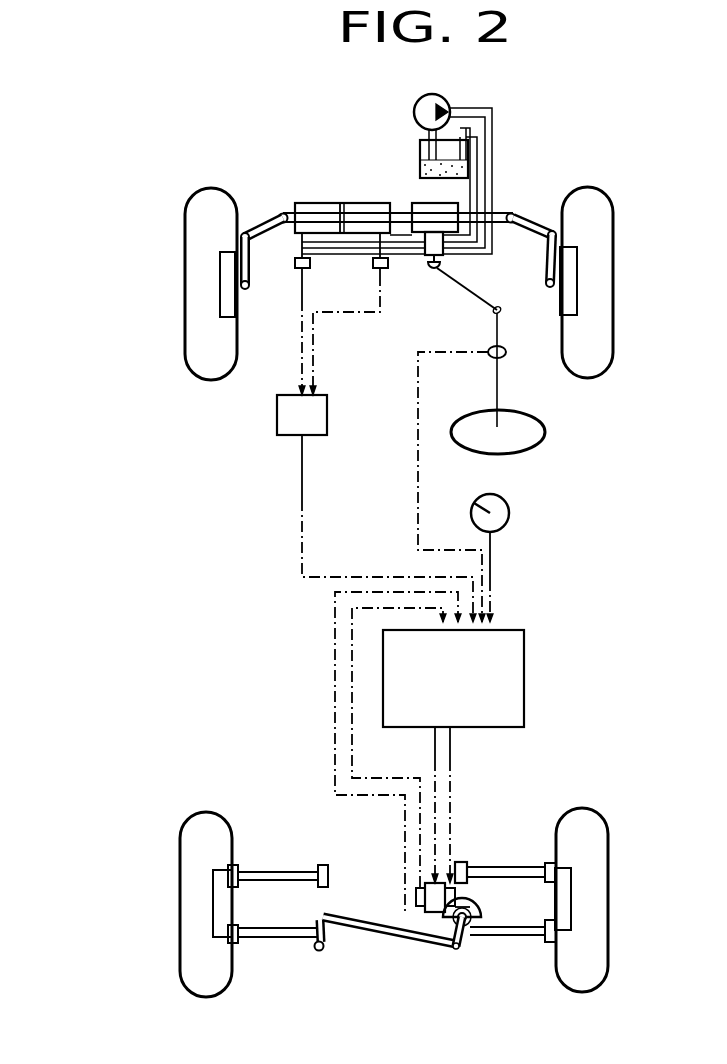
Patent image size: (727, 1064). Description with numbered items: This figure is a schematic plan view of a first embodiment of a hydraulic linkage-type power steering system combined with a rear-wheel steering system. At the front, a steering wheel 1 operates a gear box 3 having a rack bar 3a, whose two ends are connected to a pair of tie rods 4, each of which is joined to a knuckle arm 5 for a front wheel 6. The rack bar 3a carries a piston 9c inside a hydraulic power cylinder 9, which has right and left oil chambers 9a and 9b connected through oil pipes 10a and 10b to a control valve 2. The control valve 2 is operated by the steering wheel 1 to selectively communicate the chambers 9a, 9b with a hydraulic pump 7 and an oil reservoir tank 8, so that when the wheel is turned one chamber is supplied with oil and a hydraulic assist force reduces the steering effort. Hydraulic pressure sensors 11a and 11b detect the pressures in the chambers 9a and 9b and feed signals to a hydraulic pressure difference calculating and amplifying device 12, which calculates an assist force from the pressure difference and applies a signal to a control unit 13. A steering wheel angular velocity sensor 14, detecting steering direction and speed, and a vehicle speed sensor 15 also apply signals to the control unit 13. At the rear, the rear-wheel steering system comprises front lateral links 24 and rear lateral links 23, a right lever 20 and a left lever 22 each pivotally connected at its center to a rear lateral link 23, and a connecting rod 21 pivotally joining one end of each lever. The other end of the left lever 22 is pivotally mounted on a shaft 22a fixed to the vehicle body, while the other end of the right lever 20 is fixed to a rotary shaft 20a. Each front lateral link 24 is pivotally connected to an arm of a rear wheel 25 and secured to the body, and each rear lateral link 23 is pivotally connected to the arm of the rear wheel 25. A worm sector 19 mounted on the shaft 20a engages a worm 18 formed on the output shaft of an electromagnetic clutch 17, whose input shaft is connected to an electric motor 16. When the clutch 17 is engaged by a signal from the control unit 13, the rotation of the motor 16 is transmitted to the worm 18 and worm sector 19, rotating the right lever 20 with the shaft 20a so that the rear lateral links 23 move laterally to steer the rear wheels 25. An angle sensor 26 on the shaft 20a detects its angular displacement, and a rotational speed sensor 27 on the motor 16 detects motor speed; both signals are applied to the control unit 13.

The steering wheel 1 is at (545, 428).
The control valve 2 is at (440, 256).
The gear box 3 is at (428, 218).
The rack bar 3a is at (505, 213).
The tie rods 4 is at (270, 226).
The knuckle arms 5 is at (251, 277).
The front wheel 6 is at (206, 188).
The hydraulic pump 7 is at (428, 94).
The oil reservoir tank 8 is at (420, 172).
The hydraulic power cylinder 9 is at (350, 208).
The right oil chamber 9a is at (360, 203).
The left oil chamber 9b is at (304, 203).
The piston 9c is at (343, 234).
The oil pipe 10a is at (390, 240).
The oil pipe 10b is at (395, 256).
The hydraulic pressure sensor 11a is at (380, 270).
The hydraulic pressure sensor 11b is at (296, 268).
The hydraulic pressure difference calculating and amplifying device 12 is at (249, 448).
The control unit 13 is at (526, 647).
The steering wheel angular velocity sensor 14 is at (506, 352).
The vehicle speed sensor 15 is at (506, 500).
The electric motor 16 is at (435, 914).
The electromagnetic clutch 17 is at (468, 870).
The worm 18 is at (460, 893).
The worm sector 19 is at (478, 910).
The right lever 20 is at (462, 948).
The rotary shaft 20a is at (470, 905).
The connecting rod 21 is at (385, 938).
The left lever 22 is at (315, 944).
The shaft 22a is at (320, 951).
The rear lateral links 23 is at (250, 940).
The front lateral links 24 is at (268, 872).
The rear wheel 25 is at (232, 828).
The angle sensor 26 is at (478, 928).
The rotational speed sensor 27 is at (416, 896).